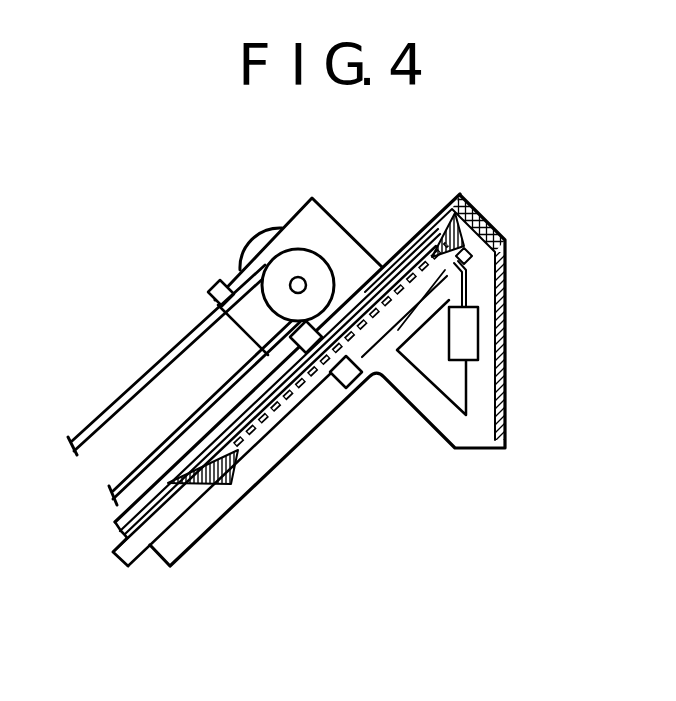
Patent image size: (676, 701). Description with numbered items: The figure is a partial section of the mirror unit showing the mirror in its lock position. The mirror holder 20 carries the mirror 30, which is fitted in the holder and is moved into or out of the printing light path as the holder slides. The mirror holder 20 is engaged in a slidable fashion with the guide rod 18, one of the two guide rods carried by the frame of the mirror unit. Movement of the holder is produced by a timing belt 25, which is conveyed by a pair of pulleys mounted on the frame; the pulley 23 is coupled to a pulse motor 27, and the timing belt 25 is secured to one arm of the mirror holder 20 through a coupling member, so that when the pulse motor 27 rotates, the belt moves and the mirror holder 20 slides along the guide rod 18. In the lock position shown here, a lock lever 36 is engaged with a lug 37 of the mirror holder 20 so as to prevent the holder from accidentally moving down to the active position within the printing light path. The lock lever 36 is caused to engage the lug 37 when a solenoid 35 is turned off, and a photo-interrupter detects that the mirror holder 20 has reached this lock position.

The guide rod 18 is at (158, 538).
The mirror holder 20 is at (227, 477).
The pulley 23 is at (288, 288).
The timing belt 25 is at (114, 402).
The pulse motor 27 is at (242, 264).
The mirror 30 is at (282, 398).
The solenoid 35 is at (472, 341).
The lock lever 36 is at (468, 290).
The lug 37 is at (470, 258).